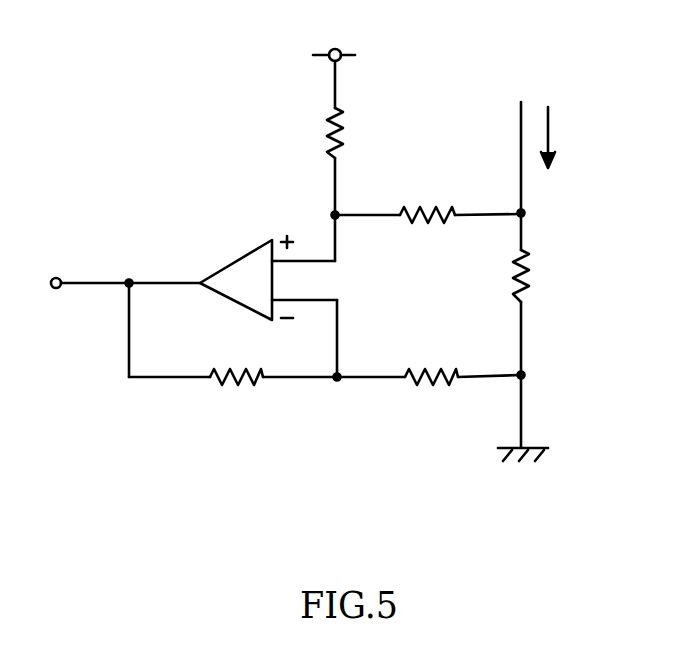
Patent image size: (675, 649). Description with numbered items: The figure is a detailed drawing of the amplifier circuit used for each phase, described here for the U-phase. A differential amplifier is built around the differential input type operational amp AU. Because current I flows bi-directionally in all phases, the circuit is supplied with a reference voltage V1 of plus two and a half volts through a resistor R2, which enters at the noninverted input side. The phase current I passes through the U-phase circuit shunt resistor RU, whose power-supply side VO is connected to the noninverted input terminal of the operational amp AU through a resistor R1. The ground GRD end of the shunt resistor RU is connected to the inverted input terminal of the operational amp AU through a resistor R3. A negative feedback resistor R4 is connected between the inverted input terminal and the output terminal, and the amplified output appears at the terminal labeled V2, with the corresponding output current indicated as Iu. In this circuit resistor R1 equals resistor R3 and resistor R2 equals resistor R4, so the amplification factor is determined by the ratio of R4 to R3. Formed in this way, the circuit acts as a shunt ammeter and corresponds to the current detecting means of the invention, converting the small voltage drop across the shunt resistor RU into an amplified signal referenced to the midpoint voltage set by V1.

The reference voltage V1 is at (405, 58).
The resistor R2 is at (360, 161).
The resistor R1 is at (460, 194).
The power-supply side VO is at (497, 198).
The current through RU I is at (538, 159).
The U-phase circuit shunt resistor RU is at (549, 348).
The ground GRD is at (546, 437).
The differential input type operational amp AU is at (226, 256).
The input voltage terminal V2 is at (125, 312).
The input current Iu is at (172, 266).
The negative feedback resistor R4 is at (233, 398).
The resistor R3 is at (429, 398).